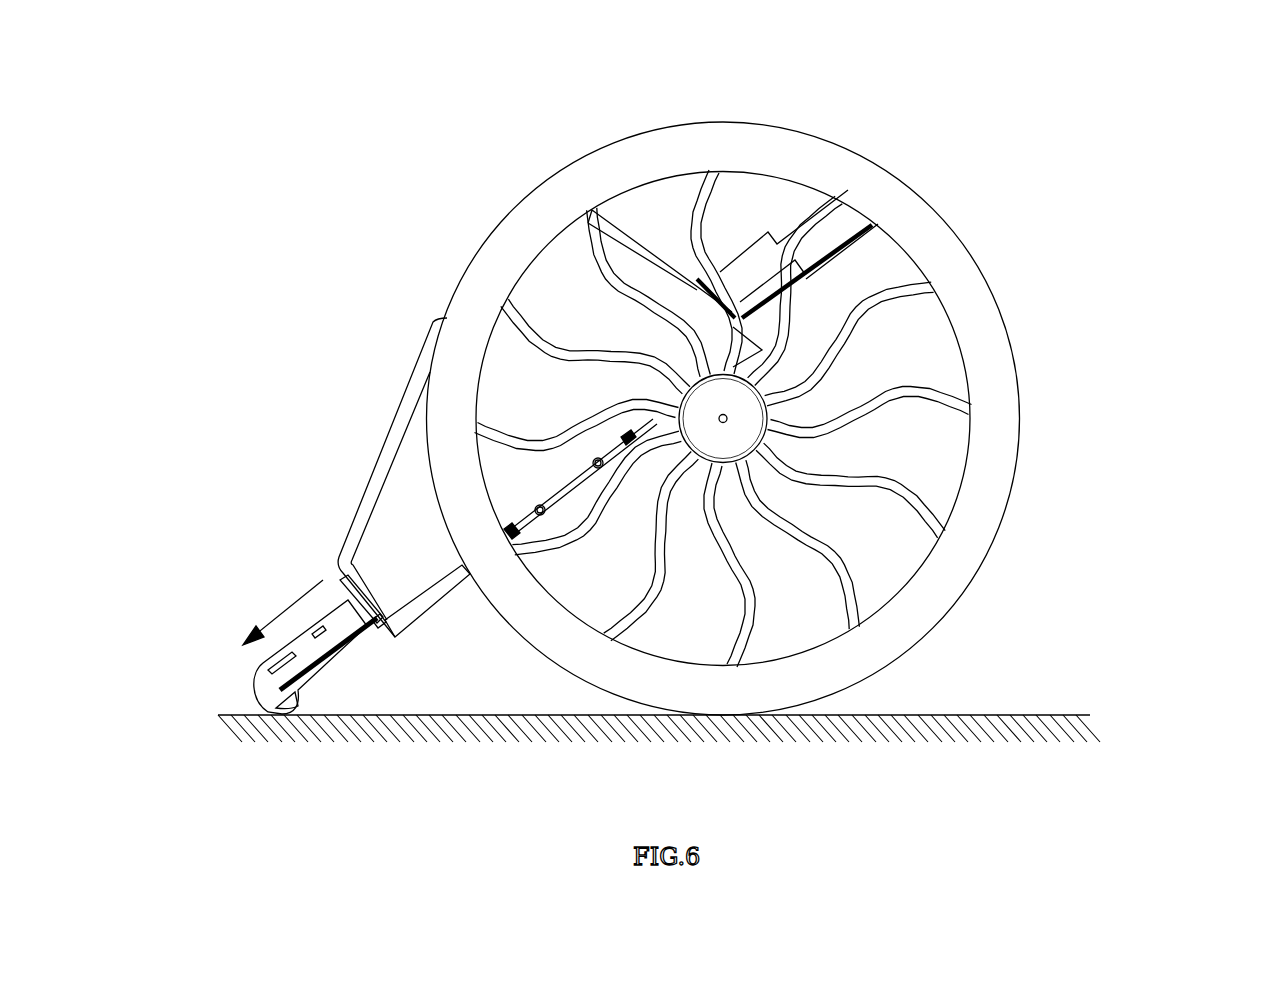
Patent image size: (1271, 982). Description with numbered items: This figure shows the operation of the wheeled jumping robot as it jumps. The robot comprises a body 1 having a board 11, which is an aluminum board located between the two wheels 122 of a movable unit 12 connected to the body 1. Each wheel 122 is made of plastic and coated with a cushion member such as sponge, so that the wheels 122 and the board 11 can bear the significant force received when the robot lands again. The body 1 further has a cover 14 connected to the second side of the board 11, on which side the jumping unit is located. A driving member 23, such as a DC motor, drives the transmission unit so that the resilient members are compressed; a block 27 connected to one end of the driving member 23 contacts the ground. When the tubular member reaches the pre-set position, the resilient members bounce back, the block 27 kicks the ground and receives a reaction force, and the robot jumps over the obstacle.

The body 1 is at (1235, 86).
The board 11 is at (424, 608).
The movable unit 12 is at (1004, 616).
The wheel 122 is at (1003, 442).
The cover 14 is at (386, 457).
The driving member 23 is at (822, 200).
The block 27 is at (267, 688).